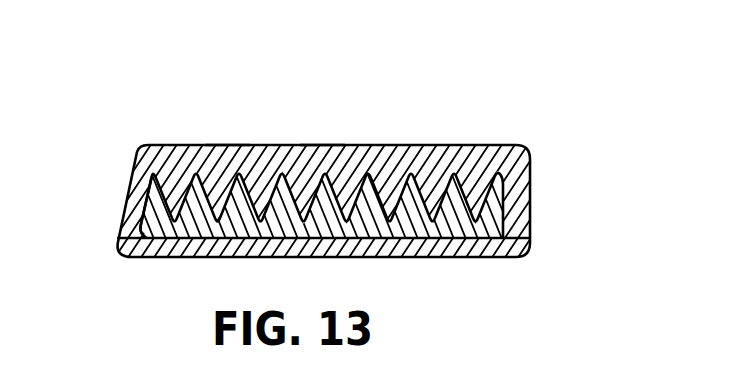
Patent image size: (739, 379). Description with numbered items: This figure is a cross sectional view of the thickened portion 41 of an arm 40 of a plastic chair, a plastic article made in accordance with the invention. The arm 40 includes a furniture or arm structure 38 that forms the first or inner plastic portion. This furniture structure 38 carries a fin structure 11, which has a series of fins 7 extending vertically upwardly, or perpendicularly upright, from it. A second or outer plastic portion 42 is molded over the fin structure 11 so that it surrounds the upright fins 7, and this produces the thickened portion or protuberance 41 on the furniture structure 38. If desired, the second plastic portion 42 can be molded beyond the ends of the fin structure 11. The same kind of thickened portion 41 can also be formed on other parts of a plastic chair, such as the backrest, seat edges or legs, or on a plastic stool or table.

The arm 40 is at (478, 90).
The thickened portion 41 is at (225, 145).
The second plastic portion 42 is at (320, 145).
The fins 7 is at (498, 192).
The fin structure 11 is at (492, 208).
The furniture structure 38 is at (147, 213).